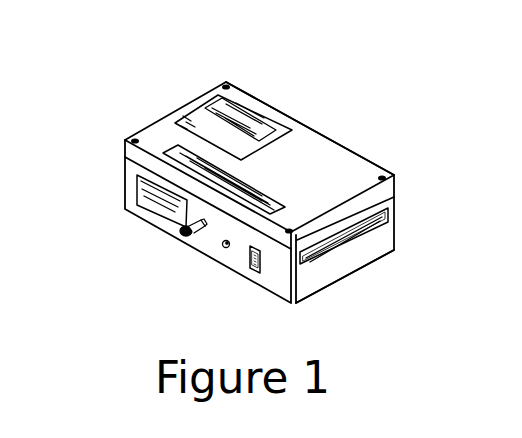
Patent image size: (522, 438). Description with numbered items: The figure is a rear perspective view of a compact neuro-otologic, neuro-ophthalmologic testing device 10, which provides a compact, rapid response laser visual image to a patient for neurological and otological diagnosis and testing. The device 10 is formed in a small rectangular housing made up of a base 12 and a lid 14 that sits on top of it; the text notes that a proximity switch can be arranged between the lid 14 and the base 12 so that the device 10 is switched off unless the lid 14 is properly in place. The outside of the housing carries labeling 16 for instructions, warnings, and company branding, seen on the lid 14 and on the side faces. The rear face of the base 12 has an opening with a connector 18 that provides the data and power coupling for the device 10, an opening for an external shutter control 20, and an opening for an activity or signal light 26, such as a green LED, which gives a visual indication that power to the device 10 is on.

The compact neuro-otologic, neuro-ophthalmologic testing device 10 is at (293, 78).
The base 12 is at (387, 246).
The lid 14 is at (303, 150).
The labeling 16 is at (214, 108).
The connector 18 is at (262, 268).
The external shutter control 20 is at (202, 237).
The activity or signal light 26 is at (227, 248).